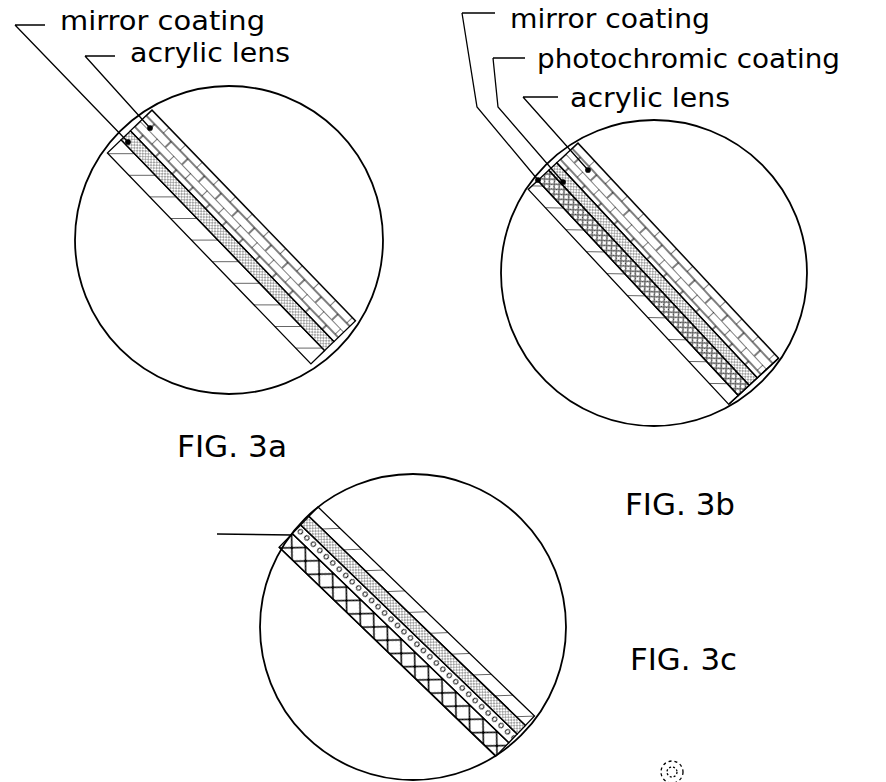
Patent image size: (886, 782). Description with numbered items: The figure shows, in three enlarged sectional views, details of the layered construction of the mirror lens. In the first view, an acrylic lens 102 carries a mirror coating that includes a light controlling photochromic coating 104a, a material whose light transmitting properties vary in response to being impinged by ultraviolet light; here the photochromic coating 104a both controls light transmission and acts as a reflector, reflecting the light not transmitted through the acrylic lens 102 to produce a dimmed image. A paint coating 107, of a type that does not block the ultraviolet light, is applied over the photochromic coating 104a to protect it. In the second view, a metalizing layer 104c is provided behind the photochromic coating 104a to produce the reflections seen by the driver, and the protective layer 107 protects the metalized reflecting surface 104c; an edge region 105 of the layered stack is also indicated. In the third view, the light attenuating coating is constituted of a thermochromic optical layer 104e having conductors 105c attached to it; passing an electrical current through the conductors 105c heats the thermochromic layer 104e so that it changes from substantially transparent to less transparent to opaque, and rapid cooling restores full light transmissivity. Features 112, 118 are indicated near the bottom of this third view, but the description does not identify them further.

In FIG. 3a, the acrylic lens 102 is at (247, 208).
In FIG. 3b, the acrylic lens 102 is at (683, 242).
In FIG. 3a, the photochromic coating 104a is at (200, 237).
In FIG. 3b, the photochromic coating 104a is at (663, 315).
In FIG. 3b, the metalizing layer 104c is at (613, 240).
In FIG. 3c, the thermochromic optical layer 104e is at (325, 570).
In FIG. 3b, the lens edge 105 is at (740, 395).
In FIG. 3c, the conductors 105c is at (337, 603).
In FIG. 3a, the protective coating 107 is at (263, 303).
In FIG. 3b, the protective coating 107 is at (585, 240).
In FIG. 3c, the light source 112 is at (690, 765).
In FIG. 3c, the viewing region 118 is at (738, 769).